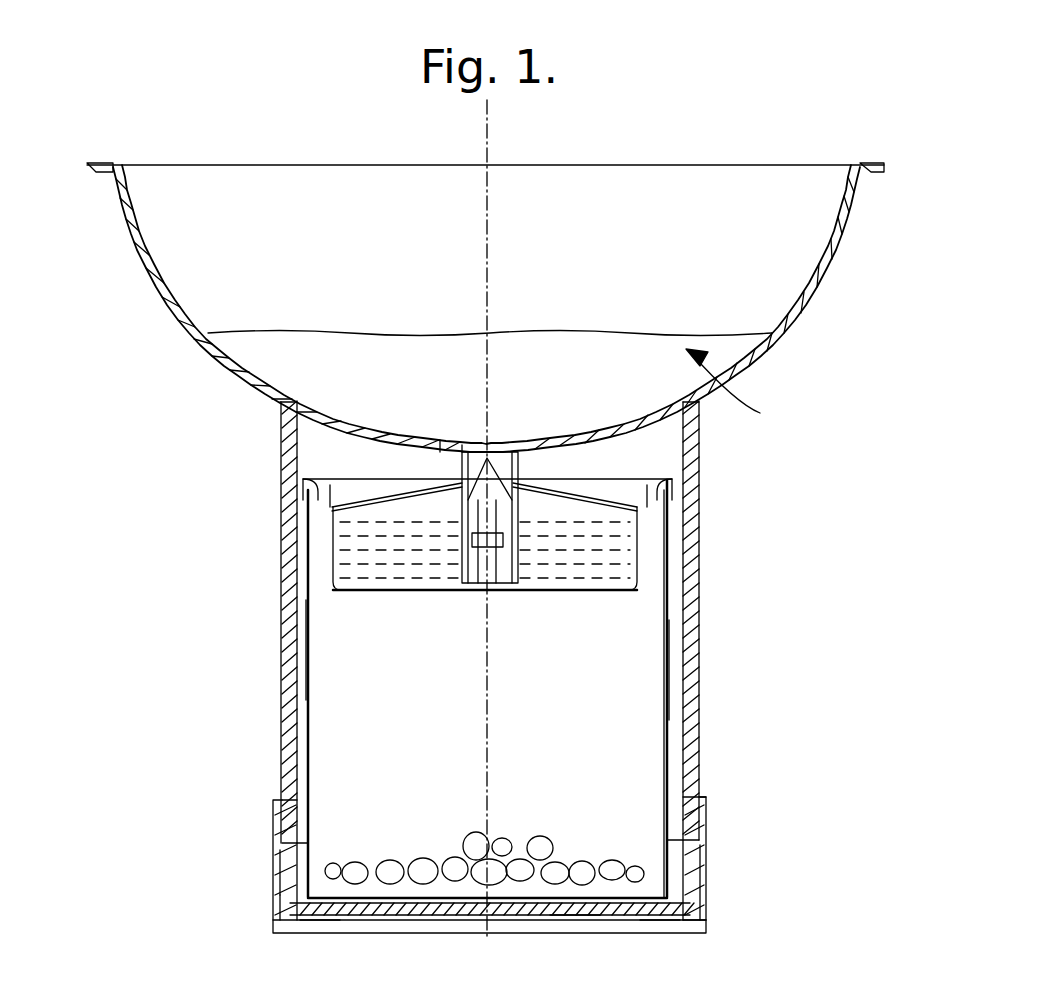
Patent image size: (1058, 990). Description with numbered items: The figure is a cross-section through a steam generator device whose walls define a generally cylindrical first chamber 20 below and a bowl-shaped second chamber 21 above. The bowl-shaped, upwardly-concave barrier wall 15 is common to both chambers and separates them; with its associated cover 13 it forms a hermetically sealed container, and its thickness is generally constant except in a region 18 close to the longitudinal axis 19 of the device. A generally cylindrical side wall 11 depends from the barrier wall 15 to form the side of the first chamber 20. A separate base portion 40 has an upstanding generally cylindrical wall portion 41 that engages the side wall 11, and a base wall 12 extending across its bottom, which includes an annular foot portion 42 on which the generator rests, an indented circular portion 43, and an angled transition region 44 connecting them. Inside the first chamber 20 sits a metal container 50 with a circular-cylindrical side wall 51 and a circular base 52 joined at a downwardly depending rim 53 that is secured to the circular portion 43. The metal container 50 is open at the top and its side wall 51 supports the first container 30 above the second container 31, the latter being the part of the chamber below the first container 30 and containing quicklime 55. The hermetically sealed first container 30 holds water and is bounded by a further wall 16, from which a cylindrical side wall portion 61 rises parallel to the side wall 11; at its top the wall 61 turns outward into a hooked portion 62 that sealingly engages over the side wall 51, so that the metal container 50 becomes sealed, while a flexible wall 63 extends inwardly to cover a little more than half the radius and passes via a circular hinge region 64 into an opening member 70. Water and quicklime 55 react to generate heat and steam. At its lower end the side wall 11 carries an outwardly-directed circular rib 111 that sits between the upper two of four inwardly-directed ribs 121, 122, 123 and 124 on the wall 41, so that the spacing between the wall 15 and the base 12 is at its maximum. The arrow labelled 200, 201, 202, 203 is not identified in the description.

The side wall 11 is at (282, 620).
The base wall 12 is at (517, 900).
The cover 13 is at (672, 165).
The barrier wall 15 is at (630, 430).
The further wall 16 is at (636, 592).
The region 18 is at (515, 426).
The longitudinal axis 19 is at (490, 233).
The first chamber 20 is at (340, 745).
The second chamber 21 is at (490, 307).
The first container 30 is at (578, 505).
The second container 31 is at (636, 775).
The base portion 40 is at (705, 932).
The upstanding generally cylindrical wall portion 41 is at (704, 873).
The annular foot portion 42 is at (687, 925).
The indented circular portion 43 is at (573, 905).
The angled transition region 44 is at (665, 920).
The metal container 50 is at (308, 697).
The circular-cylindrical side wall 51 is at (667, 722).
The circular base 52 is at (387, 900).
The downwardly depending rim 53 is at (322, 922).
The quicklime 55 is at (455, 875).
The cylindrical side wall portion 61 is at (332, 545).
The hooked portion 62 is at (300, 486).
The flexible wall 63 is at (368, 492).
The circular hinge region 64 is at (418, 438).
The opening member 70 is at (474, 462).
The outwardly-directed circular rib 111 is at (699, 835).
The inwardly-directed rib 121 is at (282, 810).
The inwardly-directed rib 122 is at (282, 843).
The inwardly-directed rib 123 is at (278, 865).
The inwardly-directed rib 124 is at (278, 895).
The flow direction 200 is at (774, 403).
The flow direction 201 is at (690, 352).
The flow direction 202 is at (690, 352).
The flow direction 203 is at (690, 352).